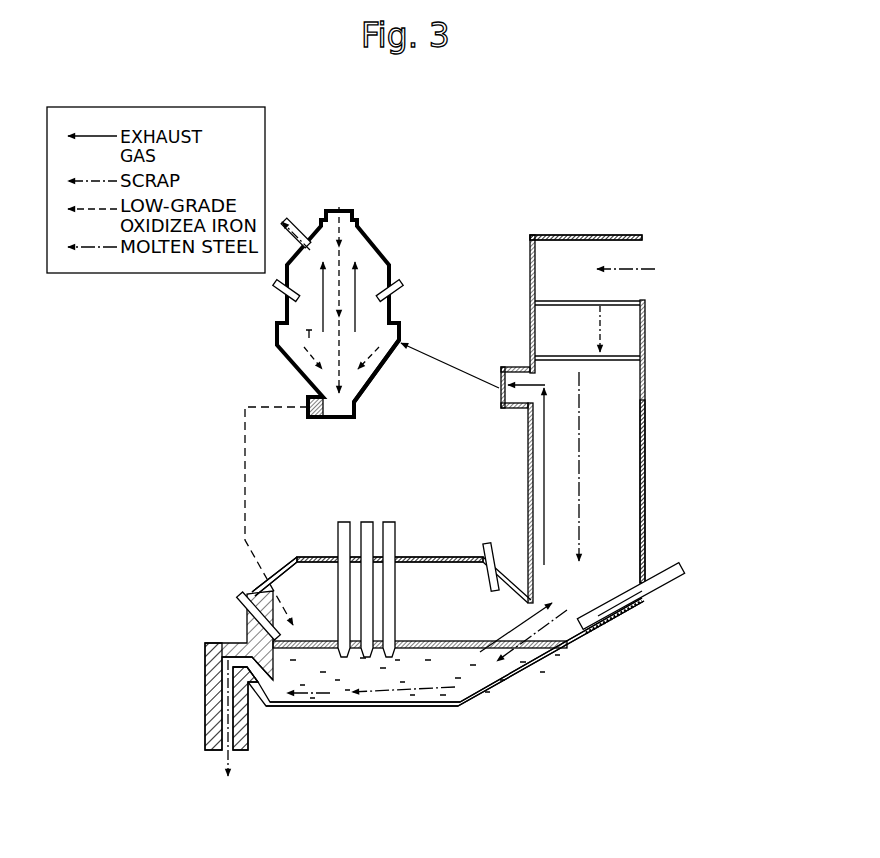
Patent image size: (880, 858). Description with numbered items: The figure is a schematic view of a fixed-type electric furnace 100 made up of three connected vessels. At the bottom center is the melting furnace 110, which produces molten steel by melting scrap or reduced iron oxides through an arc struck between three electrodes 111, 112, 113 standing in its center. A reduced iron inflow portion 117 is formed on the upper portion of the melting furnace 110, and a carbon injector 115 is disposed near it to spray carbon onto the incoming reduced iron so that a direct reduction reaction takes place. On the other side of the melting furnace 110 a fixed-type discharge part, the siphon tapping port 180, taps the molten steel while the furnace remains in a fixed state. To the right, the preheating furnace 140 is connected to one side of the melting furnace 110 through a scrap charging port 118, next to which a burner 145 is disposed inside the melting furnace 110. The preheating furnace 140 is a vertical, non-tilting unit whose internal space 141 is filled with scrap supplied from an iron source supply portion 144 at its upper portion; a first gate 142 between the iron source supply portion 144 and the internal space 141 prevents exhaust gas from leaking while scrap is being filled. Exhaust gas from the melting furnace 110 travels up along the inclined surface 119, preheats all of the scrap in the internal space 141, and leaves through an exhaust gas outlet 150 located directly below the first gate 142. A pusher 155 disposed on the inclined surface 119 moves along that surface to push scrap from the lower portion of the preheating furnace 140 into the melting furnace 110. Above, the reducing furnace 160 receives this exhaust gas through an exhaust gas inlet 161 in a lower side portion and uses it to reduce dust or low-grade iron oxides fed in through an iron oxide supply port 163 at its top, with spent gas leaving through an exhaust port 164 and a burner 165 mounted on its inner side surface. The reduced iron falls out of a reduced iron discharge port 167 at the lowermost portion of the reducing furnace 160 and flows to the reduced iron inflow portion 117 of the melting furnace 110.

The fixed-type electric furnace 100 is at (131, 363).
The melting furnace 110 is at (240, 580).
The electrode 111 is at (393, 527).
The electrode 112 is at (344, 520).
The electrode 113 is at (367, 520).
The carbon injector 115 is at (240, 600).
The reduced iron inflow portion 117 is at (270, 575).
The scrap charging port 118 is at (548, 640).
The inclined surface 119 is at (510, 680).
The preheating furnace 140 is at (622, 305).
The internal space 141 is at (628, 506).
The first gate 142 is at (622, 360).
The iron source supply portion 144 is at (587, 250).
The burner 145 is at (492, 543).
The exhaust gas outlet 150 is at (512, 366).
The pusher 155 is at (605, 615).
The reducing furnace 160 is at (373, 231).
The exhaust gas inlet 161 is at (402, 340).
The iron oxide supply port 163 is at (349, 208).
The exhaust port 164 is at (292, 226).
The burner 165 is at (272, 290).
The reduced iron discharge port 167 is at (306, 335).
The siphon tapping port 180 is at (214, 712).